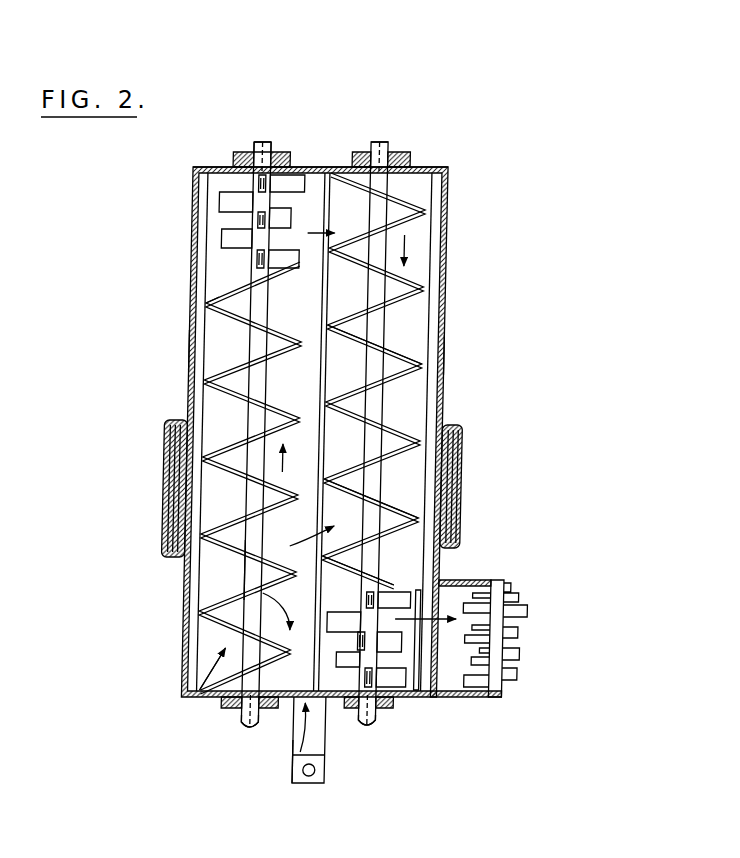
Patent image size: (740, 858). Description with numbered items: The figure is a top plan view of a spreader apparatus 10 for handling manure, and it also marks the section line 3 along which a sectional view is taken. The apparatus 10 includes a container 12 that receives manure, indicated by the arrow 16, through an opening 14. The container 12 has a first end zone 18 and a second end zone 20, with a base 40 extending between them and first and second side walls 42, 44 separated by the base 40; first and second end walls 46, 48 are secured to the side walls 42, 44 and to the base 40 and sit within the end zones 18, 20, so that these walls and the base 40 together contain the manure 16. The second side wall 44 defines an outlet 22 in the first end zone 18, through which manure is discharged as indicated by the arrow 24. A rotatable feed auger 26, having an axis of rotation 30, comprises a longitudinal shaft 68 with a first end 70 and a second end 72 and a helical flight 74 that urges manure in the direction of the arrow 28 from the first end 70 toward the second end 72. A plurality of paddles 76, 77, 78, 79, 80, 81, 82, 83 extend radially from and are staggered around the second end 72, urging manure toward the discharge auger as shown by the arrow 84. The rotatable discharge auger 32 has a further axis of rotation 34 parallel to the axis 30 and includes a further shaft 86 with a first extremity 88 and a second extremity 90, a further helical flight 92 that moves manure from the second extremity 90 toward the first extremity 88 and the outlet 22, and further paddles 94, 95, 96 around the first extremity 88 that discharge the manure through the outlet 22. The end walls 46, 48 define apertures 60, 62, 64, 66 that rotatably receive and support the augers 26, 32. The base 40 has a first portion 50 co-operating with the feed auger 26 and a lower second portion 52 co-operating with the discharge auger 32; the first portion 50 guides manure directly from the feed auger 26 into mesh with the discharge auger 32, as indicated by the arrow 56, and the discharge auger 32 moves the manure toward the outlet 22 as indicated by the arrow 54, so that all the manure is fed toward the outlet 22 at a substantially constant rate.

The spreader apparatus 10 is at (349, 85).
The container 12 is at (306, 762).
The opening 14 is at (305, 322).
The manure 16 is at (172, 588).
The first end zone 18 is at (316, 682).
The second end zone 20 is at (360, 218).
The outlet 22 is at (443, 675).
The arrow (manure discharge) 24 is at (433, 640).
The feed auger 26 is at (210, 692).
The arrow (feed direction) 28 is at (252, 458).
The axis of rotation 30 is at (257, 128).
The discharge auger 32 is at (402, 326).
The further axis of rotation 34 is at (381, 130).
The base 40 is at (360, 452).
The first side wall 42 is at (197, 350).
The second side wall 44 is at (446, 355).
The first end wall 46 is at (341, 762).
The second end wall 48 is at (325, 172).
The first portion 50 is at (224, 345).
The second portion 52 is at (410, 470).
The arrow (movement toward outlet) 54 is at (409, 243).
The arrow (transfer to discharge auger) 56 is at (452, 498).
The aperture 60 is at (272, 712).
The aperture 62 is at (388, 725).
The aperture 64 is at (247, 152).
The aperture 66 is at (405, 162).
The longitudinal shaft 68 is at (255, 568).
The first end 70 is at (267, 723).
The second end 72 is at (262, 141).
The helical flight 74 is at (212, 405).
The paddle 76 is at (207, 295).
The paddle 77 is at (289, 260).
The paddle 78 is at (229, 242).
The paddle 79 is at (258, 224).
The paddle 80 is at (212, 216).
The paddle 81 is at (230, 202).
The paddle 82 is at (258, 183).
The paddle 83 is at (308, 185).
The arrow (paddle feed direction) 84 is at (437, 216).
The further shaft 86 is at (409, 584).
The first extremity 88 is at (387, 726).
The second extremity 90 is at (391, 137).
The further helical flight 92 is at (407, 370).
The further paddle 94 is at (477, 580).
The further paddle 95 is at (357, 622).
The further paddle 96 is at (361, 665).
The section line 3- 3 is at (502, 415).